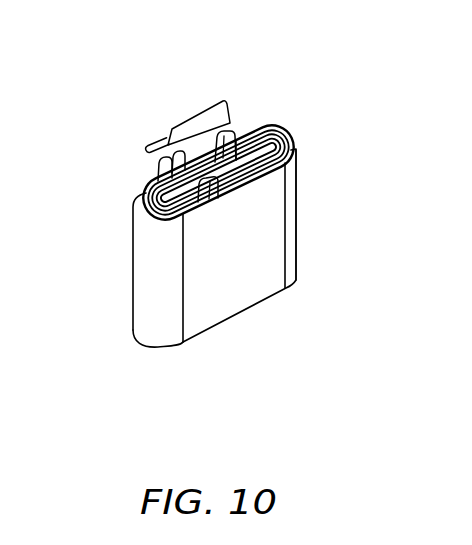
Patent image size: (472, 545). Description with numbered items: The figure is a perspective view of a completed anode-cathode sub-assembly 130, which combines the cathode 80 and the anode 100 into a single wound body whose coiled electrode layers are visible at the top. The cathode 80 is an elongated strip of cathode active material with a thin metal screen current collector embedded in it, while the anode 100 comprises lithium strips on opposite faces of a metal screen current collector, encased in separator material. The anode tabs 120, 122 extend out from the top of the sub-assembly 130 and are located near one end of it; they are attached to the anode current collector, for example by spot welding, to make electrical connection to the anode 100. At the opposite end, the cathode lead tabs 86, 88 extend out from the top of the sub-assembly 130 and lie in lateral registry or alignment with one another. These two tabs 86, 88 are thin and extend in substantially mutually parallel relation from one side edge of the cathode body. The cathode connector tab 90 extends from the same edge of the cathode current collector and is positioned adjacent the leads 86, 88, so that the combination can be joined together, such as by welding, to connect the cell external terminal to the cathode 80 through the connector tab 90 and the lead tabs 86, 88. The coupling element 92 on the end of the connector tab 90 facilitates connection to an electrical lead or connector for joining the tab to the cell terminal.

The cathode 80 is at (287, 137).
The tab 86 is at (233, 131).
The tab 88 is at (236, 141).
The cathode connector tab 90 is at (209, 120).
The coupling element 92 is at (152, 143).
The anode 100 is at (293, 183).
The tab 120 is at (150, 163).
The tab 122 is at (202, 204).
The anode-cathode sub-assembly 130 is at (100, 318).